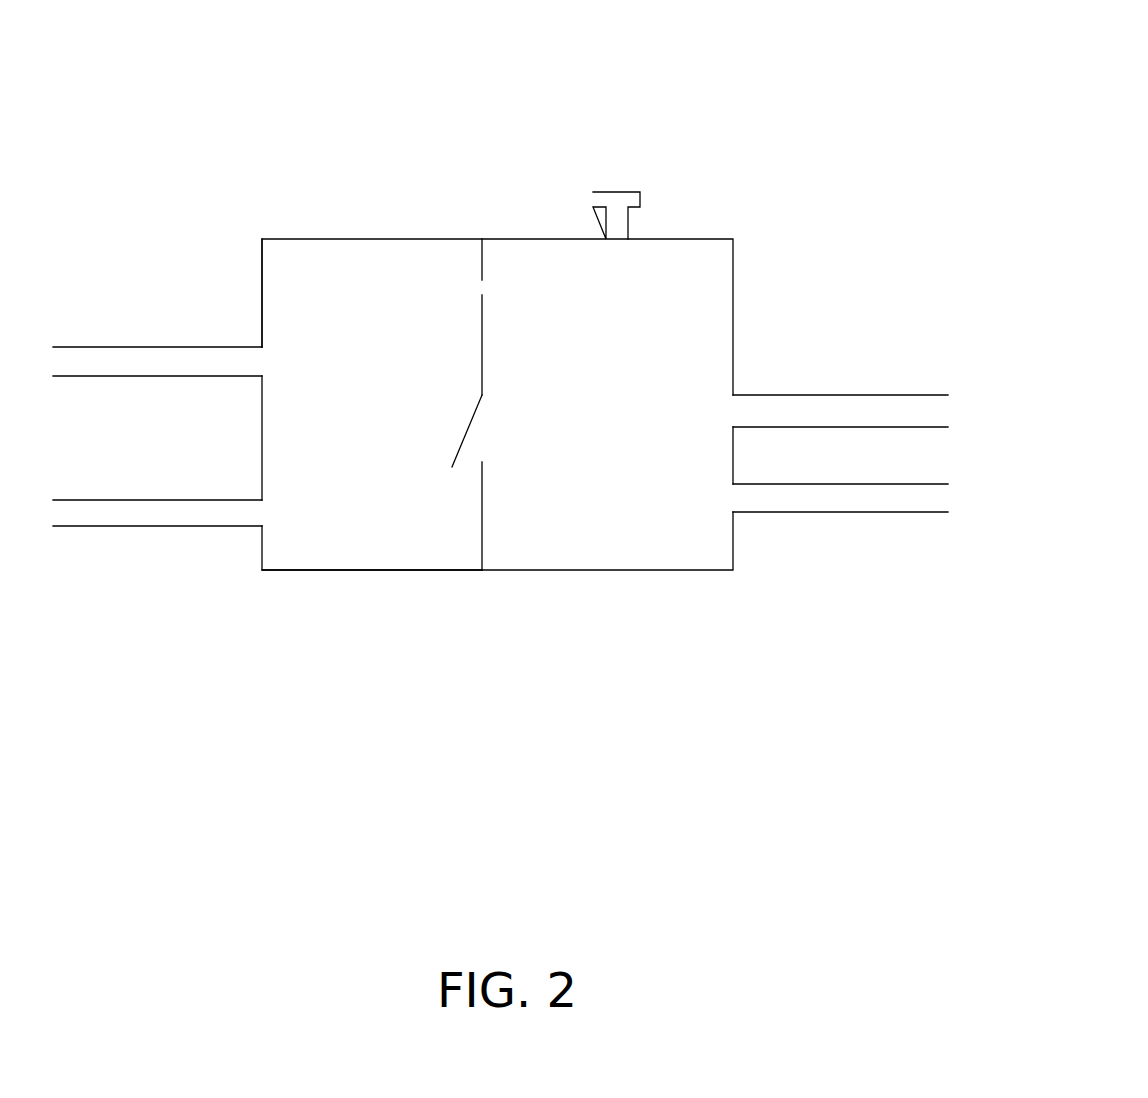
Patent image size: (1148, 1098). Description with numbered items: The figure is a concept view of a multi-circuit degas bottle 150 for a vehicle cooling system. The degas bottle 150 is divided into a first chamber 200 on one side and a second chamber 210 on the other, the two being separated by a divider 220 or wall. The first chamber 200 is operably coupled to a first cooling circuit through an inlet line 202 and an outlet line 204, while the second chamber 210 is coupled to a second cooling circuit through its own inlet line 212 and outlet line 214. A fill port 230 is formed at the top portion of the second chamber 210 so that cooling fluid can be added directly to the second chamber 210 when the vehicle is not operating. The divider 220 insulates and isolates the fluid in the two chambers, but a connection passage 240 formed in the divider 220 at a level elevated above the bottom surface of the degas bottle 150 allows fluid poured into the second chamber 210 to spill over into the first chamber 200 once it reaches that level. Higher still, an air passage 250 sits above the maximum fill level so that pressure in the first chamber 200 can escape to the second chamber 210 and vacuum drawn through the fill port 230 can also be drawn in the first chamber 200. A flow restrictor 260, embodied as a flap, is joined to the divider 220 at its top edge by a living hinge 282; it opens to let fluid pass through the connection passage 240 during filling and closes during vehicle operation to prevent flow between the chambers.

The degas bottle 150 is at (673, 112).
The first chamber 200 is at (262, 320).
The inlet line 202 is at (193, 347).
The outlet line 204 is at (175, 500).
The second chamber 210 is at (712, 288).
The inlet line 212 is at (908, 395).
The outlet line 214 is at (812, 512).
The divider 220 is at (482, 497).
The fill port 230 is at (620, 234).
The connection passage 240 is at (488, 451).
The air passage 250 is at (484, 290).
The flow restrictor 260 is at (458, 448).
The living hinge 282 is at (482, 395).